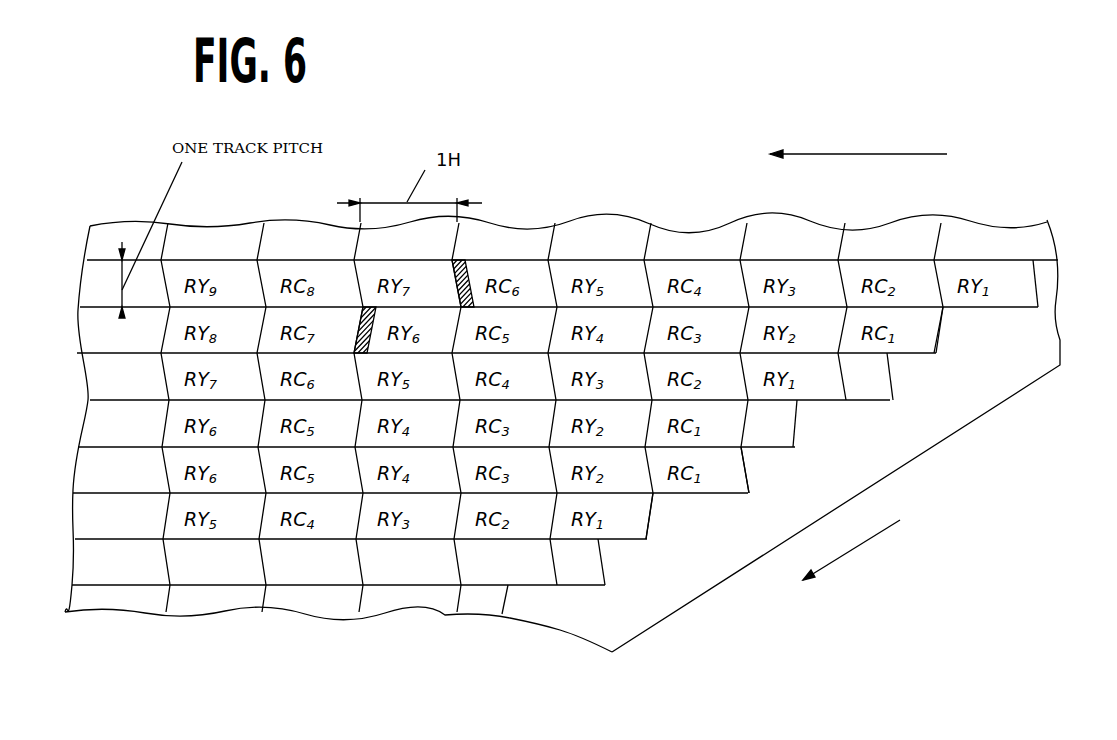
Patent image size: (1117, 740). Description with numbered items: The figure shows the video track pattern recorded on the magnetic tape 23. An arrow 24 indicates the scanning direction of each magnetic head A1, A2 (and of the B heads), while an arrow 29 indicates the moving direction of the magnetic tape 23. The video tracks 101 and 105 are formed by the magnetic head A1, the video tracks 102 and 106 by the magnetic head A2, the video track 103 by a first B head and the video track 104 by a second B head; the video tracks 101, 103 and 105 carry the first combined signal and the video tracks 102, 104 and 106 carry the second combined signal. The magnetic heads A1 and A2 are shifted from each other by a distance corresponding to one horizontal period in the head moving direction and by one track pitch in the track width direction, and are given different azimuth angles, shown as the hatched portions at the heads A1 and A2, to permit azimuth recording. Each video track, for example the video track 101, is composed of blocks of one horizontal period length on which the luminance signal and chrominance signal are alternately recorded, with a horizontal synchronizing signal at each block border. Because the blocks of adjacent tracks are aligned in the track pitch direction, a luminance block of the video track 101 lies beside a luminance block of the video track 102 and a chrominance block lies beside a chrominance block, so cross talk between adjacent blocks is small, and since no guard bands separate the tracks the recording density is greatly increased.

The magnetic tape 23 is at (667, 597).
The arrow indicating scanning direction 24 is at (868, 152).
The arrow indicating tape moving direction 29 is at (862, 547).
The video track 101 is at (652, 518).
The video track 102 is at (753, 469).
The video track 103 is at (800, 423).
The video track 104 is at (895, 378).
The video track 105 is at (938, 335).
The video track 106 is at (1042, 285).
The magnetic head A1 is at (358, 312).
The magnetic head A2 is at (473, 275).